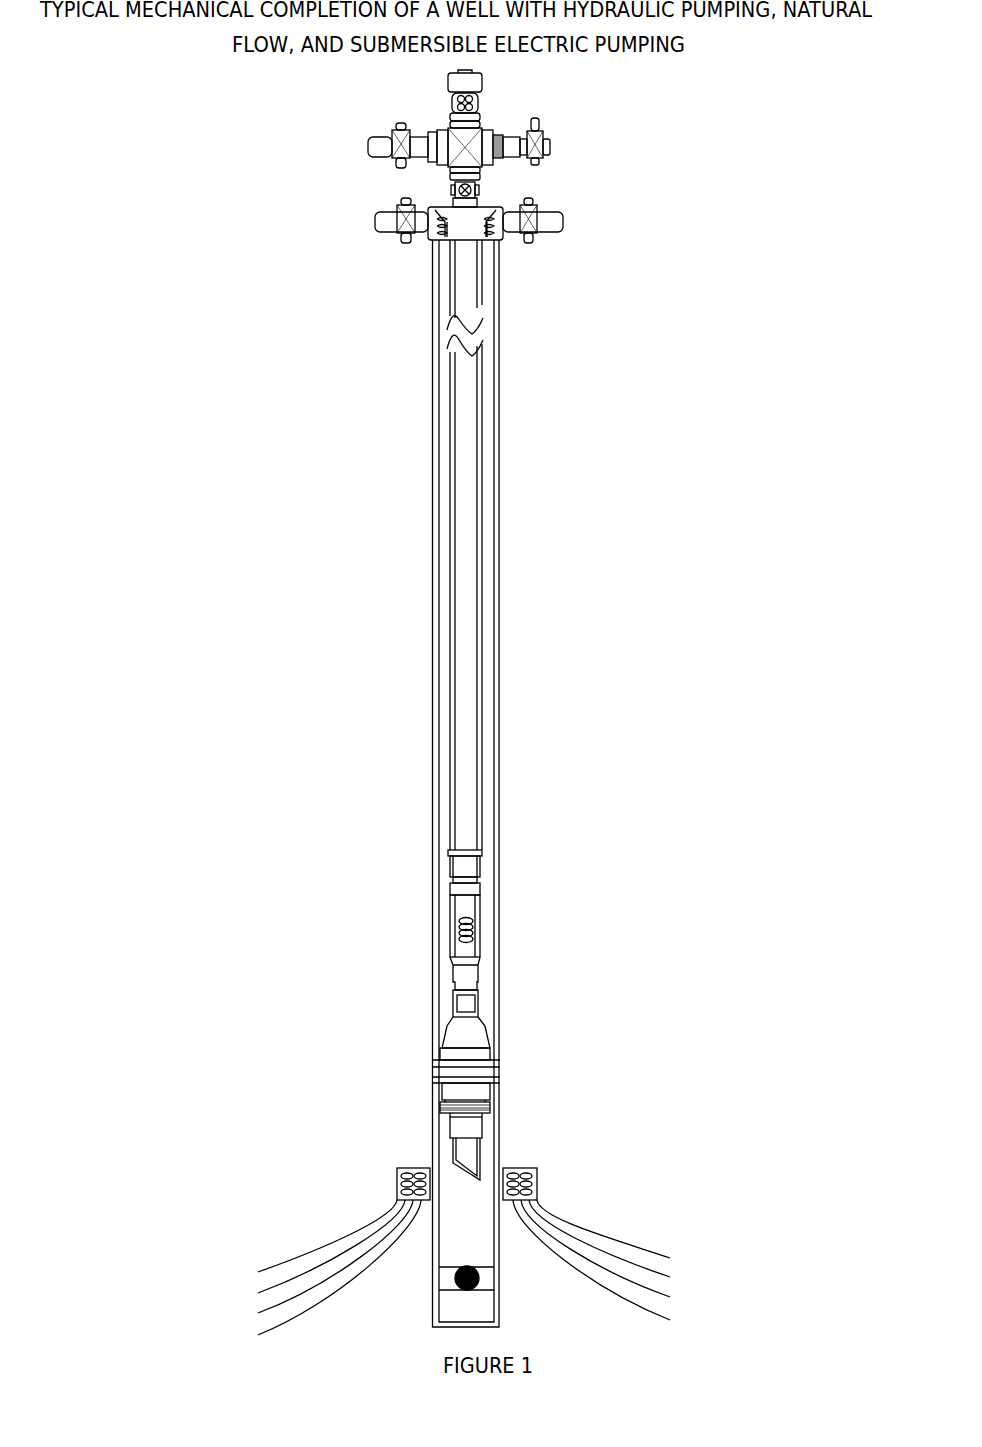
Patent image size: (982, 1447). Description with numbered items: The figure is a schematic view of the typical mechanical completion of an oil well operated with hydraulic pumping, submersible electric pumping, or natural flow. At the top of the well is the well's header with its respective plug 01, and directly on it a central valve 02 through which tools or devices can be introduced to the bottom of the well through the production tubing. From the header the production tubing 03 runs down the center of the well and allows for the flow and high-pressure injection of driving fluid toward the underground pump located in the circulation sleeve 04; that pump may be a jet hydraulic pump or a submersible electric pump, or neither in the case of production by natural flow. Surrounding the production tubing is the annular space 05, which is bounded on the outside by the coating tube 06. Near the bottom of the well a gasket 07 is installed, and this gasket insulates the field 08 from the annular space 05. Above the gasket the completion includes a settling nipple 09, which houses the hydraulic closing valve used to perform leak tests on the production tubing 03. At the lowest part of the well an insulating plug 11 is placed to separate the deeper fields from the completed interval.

The well's header with its respective plug 01 is at (470, 82).
The central valve 02 is at (470, 147).
The production tubing 03 is at (470, 278).
The circulation sleeve 04 is at (470, 910).
The annular space 05 is at (490, 370).
The coating tube 06 is at (497, 442).
The gasket 07 is at (470, 1072).
The field 08 is at (533, 1213).
The settling nipple 09 is at (468, 1000).
The insulating plug 11 is at (479, 1278).